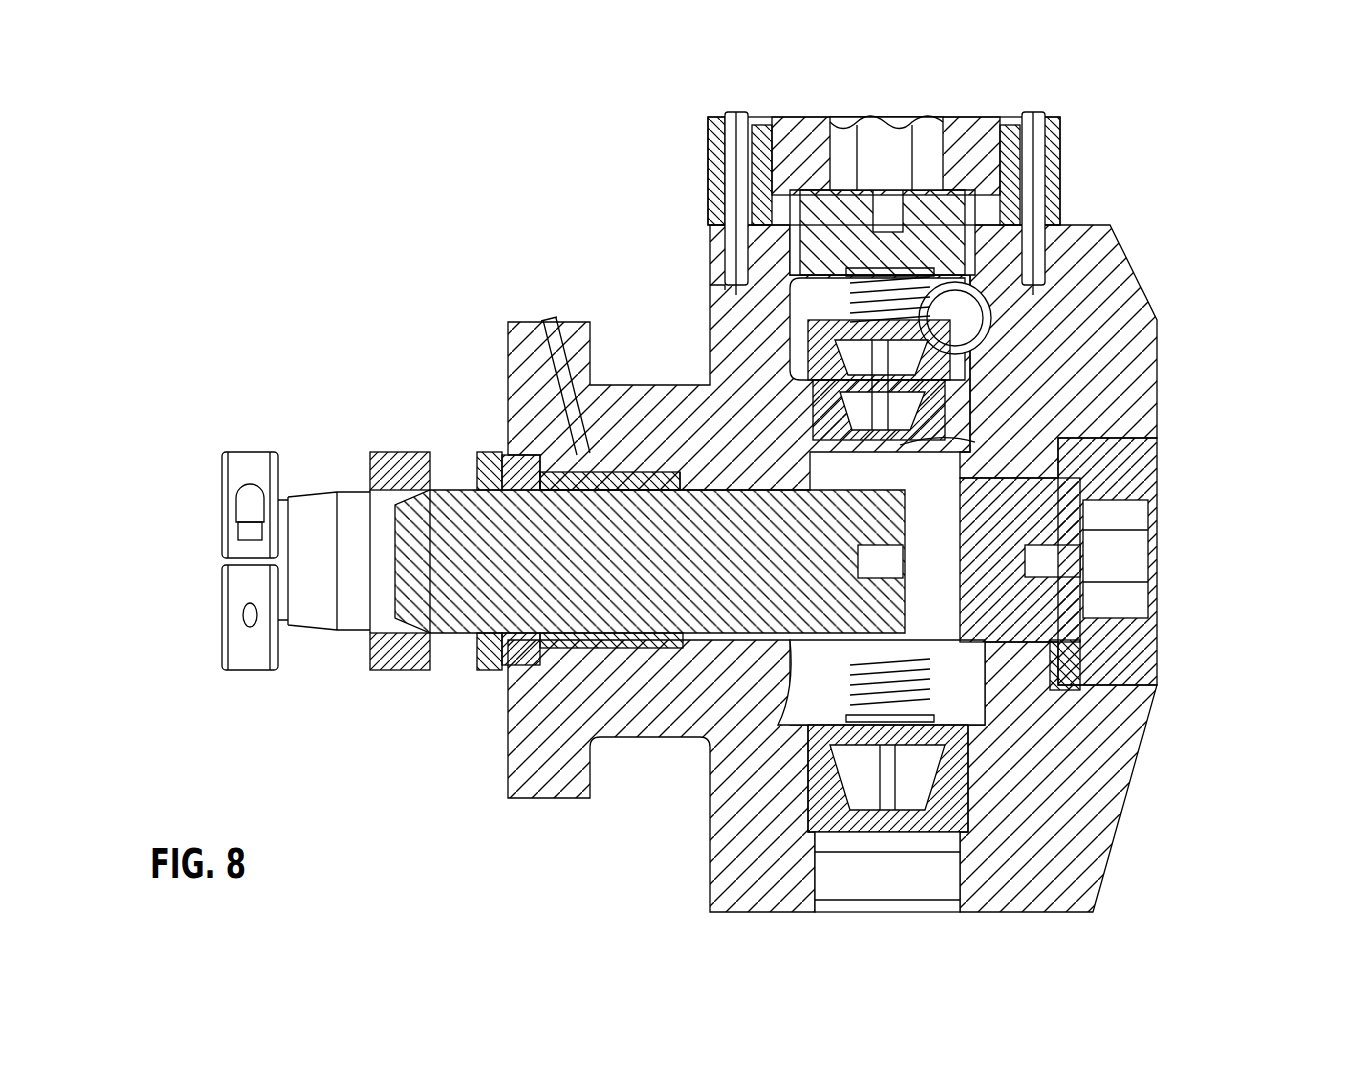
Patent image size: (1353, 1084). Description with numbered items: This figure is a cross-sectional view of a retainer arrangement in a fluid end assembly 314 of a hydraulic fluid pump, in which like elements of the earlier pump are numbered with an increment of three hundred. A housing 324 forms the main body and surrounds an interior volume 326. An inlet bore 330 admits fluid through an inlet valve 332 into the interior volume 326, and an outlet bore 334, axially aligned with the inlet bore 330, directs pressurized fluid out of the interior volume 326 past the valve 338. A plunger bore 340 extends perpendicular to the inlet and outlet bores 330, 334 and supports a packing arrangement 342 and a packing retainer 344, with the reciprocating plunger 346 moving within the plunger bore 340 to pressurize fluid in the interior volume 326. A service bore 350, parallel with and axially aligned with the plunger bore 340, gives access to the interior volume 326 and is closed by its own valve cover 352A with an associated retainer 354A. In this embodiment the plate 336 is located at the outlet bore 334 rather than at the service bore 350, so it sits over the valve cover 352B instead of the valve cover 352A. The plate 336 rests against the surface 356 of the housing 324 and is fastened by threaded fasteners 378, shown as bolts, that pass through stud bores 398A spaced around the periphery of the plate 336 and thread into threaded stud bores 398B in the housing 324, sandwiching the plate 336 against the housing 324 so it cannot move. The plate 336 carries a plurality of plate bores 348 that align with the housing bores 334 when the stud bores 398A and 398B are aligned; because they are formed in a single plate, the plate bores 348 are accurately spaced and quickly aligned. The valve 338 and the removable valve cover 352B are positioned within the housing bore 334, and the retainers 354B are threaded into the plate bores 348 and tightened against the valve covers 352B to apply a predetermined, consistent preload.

The fluid end assembly 314 is at (375, 295).
The housing 324 is at (1095, 845).
The interior volume 326 is at (995, 435).
The inlet bore 330 is at (820, 885).
The inlet valve 332 is at (820, 760).
The outlet bore 334 is at (1060, 245).
The plate 336 is at (794, 166).
The valve 338 is at (975, 330).
The plunger bore 340 is at (700, 630).
The packing arrangement 342 is at (625, 470).
The packing retainer 344 is at (487, 455).
The reciprocating plunger 346 is at (345, 633).
The plate bores 348 is at (765, 135).
The service bore 350 is at (1050, 645).
The valve cover 352A is at (1060, 600).
The valve cover 352B is at (965, 200).
The retainer 354A is at (1160, 500).
The retainers 354B is at (960, 117).
The surface 356 is at (990, 275).
The threaded fasteners 378 is at (735, 117).
The stud bores 398A is at (712, 190).
The threaded stud bores 398B is at (712, 255).